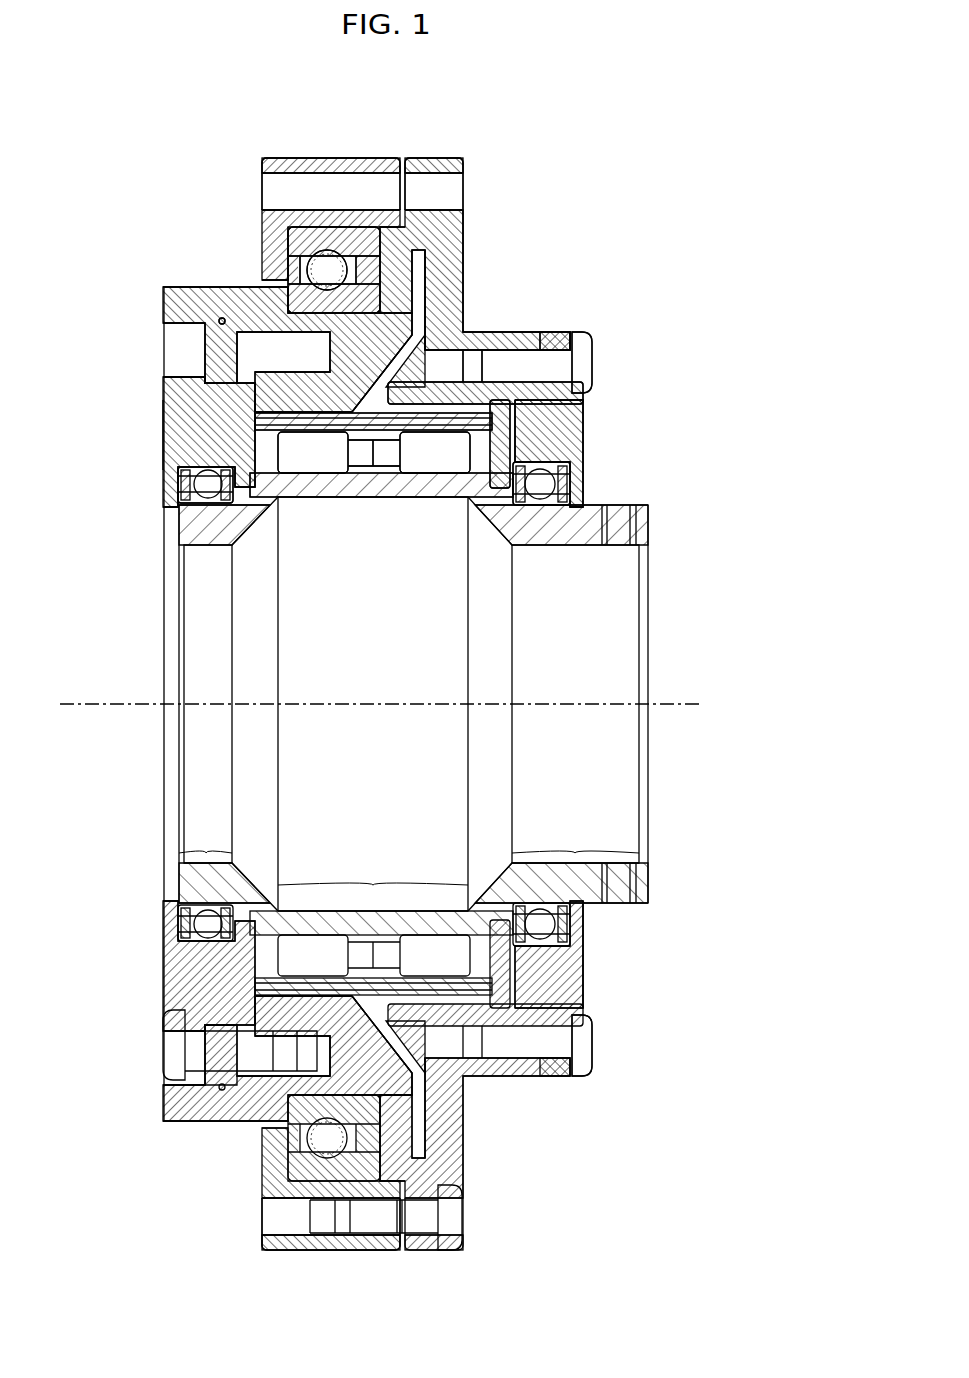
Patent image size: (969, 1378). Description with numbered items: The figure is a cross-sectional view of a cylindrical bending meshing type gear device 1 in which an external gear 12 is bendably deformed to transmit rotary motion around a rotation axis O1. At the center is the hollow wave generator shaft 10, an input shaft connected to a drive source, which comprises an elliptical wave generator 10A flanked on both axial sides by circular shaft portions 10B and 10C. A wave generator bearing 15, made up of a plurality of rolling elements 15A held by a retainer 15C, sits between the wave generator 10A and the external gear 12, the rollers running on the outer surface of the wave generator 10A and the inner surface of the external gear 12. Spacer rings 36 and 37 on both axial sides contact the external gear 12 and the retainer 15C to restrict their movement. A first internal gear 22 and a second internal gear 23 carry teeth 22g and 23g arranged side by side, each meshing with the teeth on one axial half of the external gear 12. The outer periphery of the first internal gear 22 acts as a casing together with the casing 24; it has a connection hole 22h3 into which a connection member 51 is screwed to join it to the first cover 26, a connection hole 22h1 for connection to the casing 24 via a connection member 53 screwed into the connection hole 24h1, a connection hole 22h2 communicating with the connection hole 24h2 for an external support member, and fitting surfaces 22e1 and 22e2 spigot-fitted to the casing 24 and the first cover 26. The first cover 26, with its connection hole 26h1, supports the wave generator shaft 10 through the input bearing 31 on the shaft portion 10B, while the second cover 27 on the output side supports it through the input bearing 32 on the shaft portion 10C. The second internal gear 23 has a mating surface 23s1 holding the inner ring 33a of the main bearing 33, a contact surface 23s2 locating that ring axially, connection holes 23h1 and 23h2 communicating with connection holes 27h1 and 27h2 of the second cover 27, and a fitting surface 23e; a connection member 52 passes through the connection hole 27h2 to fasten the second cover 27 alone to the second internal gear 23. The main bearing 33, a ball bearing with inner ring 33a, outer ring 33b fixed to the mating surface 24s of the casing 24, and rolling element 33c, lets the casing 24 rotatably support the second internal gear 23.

The bending meshing type gear device 1 is at (620, 165).
The wave generator shaft 10 is at (620, 605).
The wave generator 10A is at (373, 880).
The shaft portion 10B is at (575, 840).
The shaft portion 10C is at (205, 840).
The external gear 12 is at (363, 423).
The wave generator bearing 15 is at (490, 457).
The rolling elements 15A is at (316, 455).
The retainer 15C is at (272, 460).
The first internal gear 22 is at (463, 226).
The fitting surface 22e1 is at (388, 1197).
The fitting surface 22e2 is at (580, 975).
The teeth 22g is at (458, 356).
The connection hole 22h1 is at (437, 1187).
The connection hole 22h2 is at (450, 197).
The connection hole 22h3 is at (507, 343).
The second internal gear 23 is at (247, 358).
The fitting surface 23e is at (167, 938).
The teeth 23g is at (220, 320).
The connection hole 23h1 is at (245, 357).
The connection hole 23h2 is at (190, 1117).
The mating surface 23s1 is at (268, 1132).
The contact surface 23s2 is at (398, 1108).
The casing 24 is at (352, 158).
The connection hole 24h1 is at (370, 1236).
The connection hole 24h2 is at (262, 196).
The mating surface 24s is at (300, 1180).
The first cover 26 is at (582, 443).
The connection hole 26h1 is at (560, 335).
The second cover 27 is at (166, 302).
The connection hole 27h1 is at (180, 365).
The connection hole 27h2 is at (178, 1015).
The input bearing 31 is at (543, 487).
The input bearing 32 is at (175, 481).
The main bearing 33 is at (357, 230).
The inner ring 33a is at (283, 270).
The outer ring 33b is at (325, 251).
The rolling element 33c is at (322, 262).
The spacer ring 36 is at (540, 345).
The spacer ring 37 is at (173, 421).
The connection member 51 is at (592, 370).
The connection member 52 is at (175, 1067).
The connection member 53 is at (447, 1236).
The rotation axis O1 is at (400, 704).